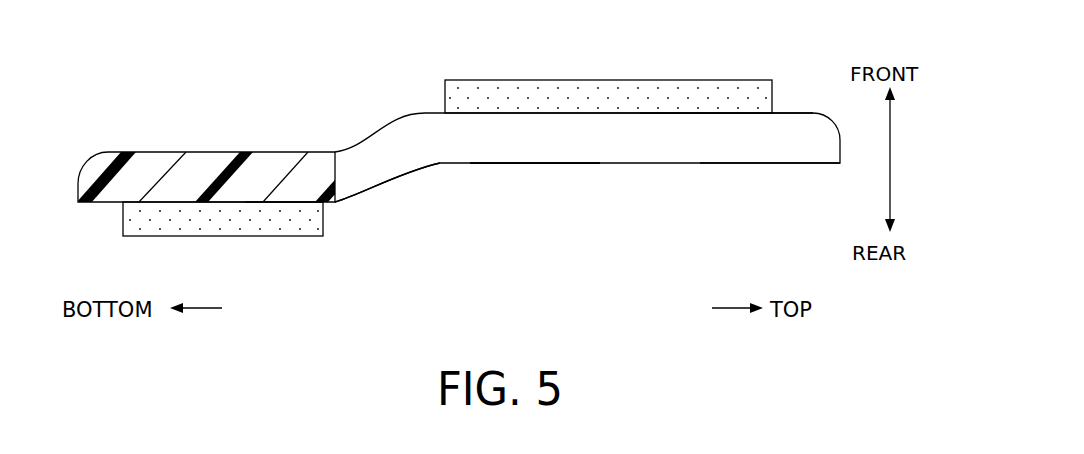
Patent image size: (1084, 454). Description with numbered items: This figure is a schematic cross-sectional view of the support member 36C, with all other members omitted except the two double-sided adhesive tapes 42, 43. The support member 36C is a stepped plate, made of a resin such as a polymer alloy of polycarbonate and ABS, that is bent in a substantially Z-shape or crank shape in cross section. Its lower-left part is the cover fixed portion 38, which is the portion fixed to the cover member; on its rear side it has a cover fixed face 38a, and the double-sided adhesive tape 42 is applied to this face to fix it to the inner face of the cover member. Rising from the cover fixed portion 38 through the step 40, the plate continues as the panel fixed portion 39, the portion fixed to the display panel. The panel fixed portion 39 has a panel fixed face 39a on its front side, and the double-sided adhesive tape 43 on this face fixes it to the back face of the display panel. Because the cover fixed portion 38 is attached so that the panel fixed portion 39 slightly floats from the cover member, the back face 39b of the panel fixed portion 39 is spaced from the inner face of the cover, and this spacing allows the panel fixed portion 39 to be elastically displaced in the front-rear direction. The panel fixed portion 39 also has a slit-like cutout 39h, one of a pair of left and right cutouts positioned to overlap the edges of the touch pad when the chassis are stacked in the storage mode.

The support member 36C is at (108, 29).
The cover fixed portion 38 is at (180, 148).
The cover fixed face 38a is at (268, 203).
The panel fixed portion 39 is at (641, 170).
The panel fixed face 39a is at (663, 112).
The back face 39b is at (757, 164).
The cutout 39h is at (572, 230).
The step 40 is at (387, 192).
The double-sided adhesive tape 42 is at (197, 220).
The double-sided adhesive tape 43 is at (565, 92).